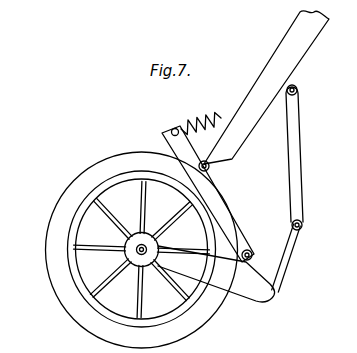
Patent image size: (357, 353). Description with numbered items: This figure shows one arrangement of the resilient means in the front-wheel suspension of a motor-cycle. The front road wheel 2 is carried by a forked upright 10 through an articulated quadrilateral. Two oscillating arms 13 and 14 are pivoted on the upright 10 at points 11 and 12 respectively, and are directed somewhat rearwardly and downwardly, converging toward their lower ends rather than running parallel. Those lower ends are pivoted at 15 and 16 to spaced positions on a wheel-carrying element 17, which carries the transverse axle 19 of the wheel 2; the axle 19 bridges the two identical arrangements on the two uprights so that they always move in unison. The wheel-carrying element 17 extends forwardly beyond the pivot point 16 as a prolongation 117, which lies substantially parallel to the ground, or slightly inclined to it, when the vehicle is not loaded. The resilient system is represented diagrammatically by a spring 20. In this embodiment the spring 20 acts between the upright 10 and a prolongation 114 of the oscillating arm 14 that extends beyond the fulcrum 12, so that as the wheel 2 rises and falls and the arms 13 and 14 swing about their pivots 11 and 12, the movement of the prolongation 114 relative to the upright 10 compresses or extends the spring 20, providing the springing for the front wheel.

The front road wheel 2 is at (65, 292).
The forked upright 10 is at (294, 38).
The pivot of arm 13 11 is at (296, 86).
The fulcrum of arm 14 12 is at (211, 168).
The oscillating arm 13 is at (303, 147).
The oscillating arm 14 is at (218, 213).
The pivot of arm 13 on wheel-carrying element 15 is at (302, 220).
The pivot of arm 14 on wheel-carrying element 16 is at (272, 283).
The wheel-carrying element 17 is at (282, 255).
The transverse axle 19 is at (102, 315).
The spring 20 is at (183, 116).
The prolongation of oscillating arm 14 114 is at (160, 135).
The prolongation of wheel-carrying element 117 is at (221, 273).